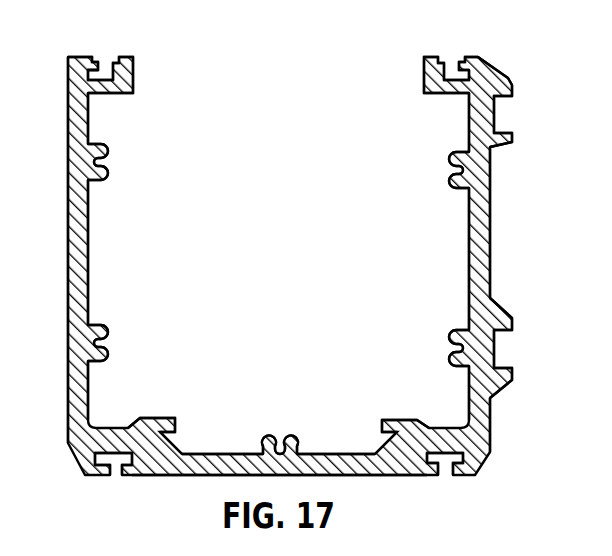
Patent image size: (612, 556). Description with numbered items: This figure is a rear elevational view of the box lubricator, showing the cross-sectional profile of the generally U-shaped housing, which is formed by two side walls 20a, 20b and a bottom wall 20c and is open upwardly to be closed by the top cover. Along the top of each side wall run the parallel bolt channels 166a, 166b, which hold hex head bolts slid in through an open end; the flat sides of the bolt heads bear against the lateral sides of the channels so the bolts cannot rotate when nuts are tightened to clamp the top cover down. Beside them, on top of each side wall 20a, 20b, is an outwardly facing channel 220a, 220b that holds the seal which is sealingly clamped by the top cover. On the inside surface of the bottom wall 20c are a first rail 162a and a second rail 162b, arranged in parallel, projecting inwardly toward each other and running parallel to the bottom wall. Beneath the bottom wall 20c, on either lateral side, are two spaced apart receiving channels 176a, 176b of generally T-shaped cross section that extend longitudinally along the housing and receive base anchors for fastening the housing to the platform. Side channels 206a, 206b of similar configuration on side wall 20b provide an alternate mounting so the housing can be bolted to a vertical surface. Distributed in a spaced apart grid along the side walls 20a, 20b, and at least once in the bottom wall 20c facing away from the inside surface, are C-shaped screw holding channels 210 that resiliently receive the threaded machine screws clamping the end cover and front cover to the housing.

The side wall 20a is at (67, 226).
The side wall 20b is at (486, 219).
The bottom wall 20c is at (183, 468).
The outwardly facing channel 220a is at (82, 57).
The outwardly facing channel 220b is at (468, 57).
The bolt channel 166a is at (98, 76).
The bolt channel 166b is at (456, 76).
The side channel 206a is at (495, 349).
The side channel 206b is at (495, 112).
The screw holding channel 210 is at (106, 181).
The first rail 162a is at (158, 418).
The second rail 162b is at (399, 406).
The receiving channel 176a is at (113, 470).
The receiving channel 176b is at (447, 470).